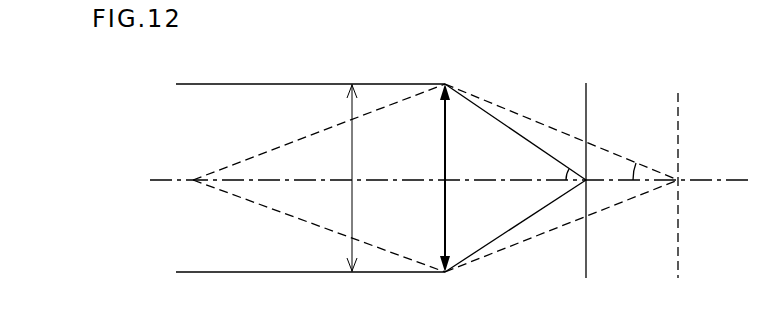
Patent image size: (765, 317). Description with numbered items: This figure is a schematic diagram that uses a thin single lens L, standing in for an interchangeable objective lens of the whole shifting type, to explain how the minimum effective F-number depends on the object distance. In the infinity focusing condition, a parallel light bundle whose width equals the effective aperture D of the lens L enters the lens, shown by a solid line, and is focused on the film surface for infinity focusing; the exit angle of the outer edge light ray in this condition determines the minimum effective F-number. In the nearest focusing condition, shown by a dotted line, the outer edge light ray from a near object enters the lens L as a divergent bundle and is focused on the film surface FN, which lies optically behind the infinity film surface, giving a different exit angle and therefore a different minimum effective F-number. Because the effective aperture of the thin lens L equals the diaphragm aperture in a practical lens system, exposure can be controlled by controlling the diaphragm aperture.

The lens L is at (445, 155).
The effective aperture D is at (343, 178).
The film surface in the nearest focusing condition FN is at (678, 115).